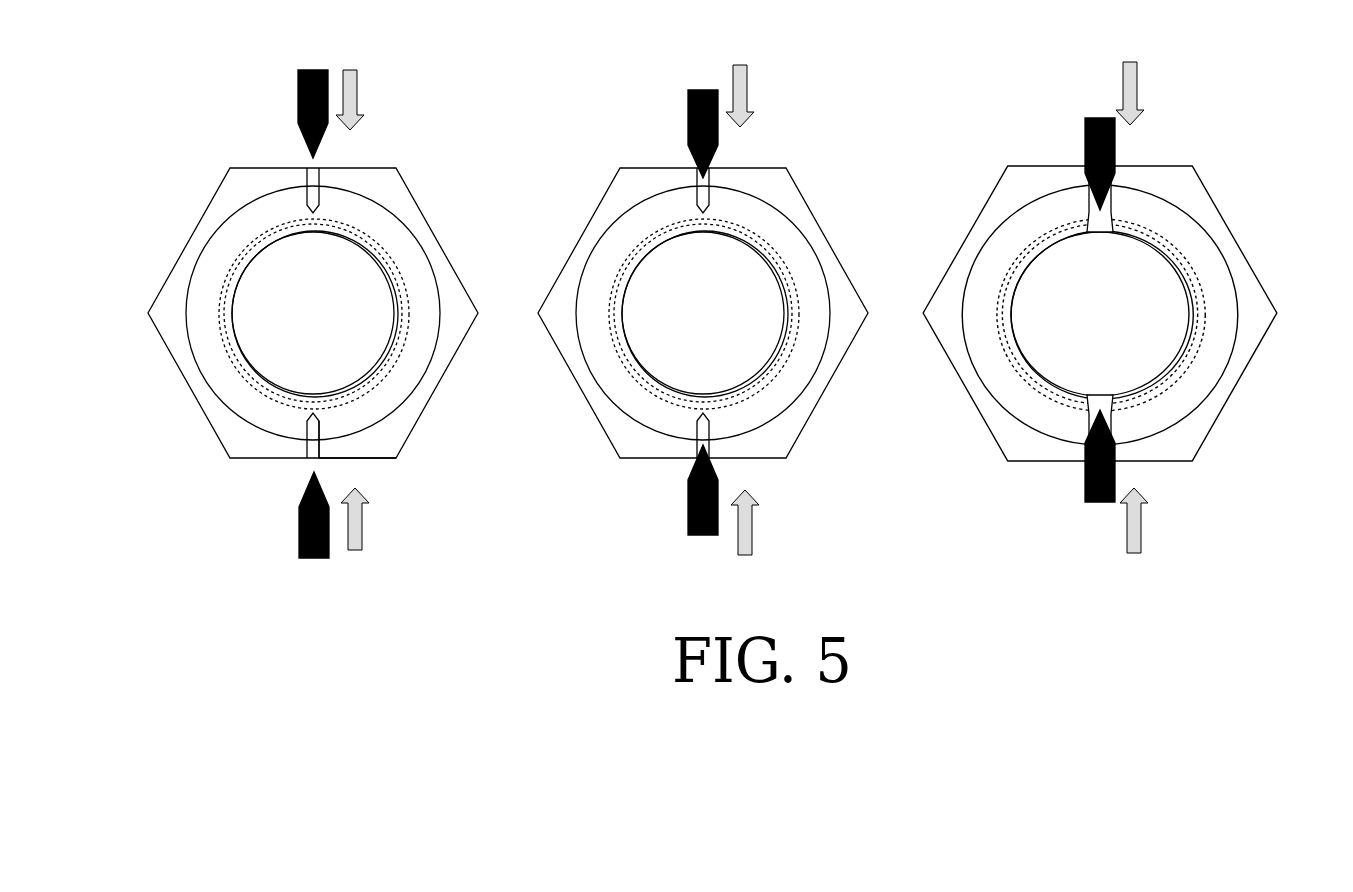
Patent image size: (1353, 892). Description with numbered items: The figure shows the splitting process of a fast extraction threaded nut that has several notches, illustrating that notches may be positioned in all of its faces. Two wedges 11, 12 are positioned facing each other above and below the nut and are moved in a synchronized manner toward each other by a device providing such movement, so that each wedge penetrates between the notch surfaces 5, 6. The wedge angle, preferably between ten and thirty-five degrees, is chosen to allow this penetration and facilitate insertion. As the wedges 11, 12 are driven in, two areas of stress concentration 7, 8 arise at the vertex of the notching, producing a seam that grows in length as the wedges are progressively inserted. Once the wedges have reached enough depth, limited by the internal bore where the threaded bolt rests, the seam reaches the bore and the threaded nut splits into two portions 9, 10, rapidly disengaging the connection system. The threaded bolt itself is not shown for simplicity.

The surface 5 is at (300, 442).
The surface 6 is at (330, 442).
The area of stress concentration 7 is at (692, 400).
The area of stress concentration 8 is at (688, 213).
The portion 9 is at (985, 247).
The portion 10 is at (1205, 371).
The wedge 11 is at (294, 113).
The wedge 12 is at (292, 541).